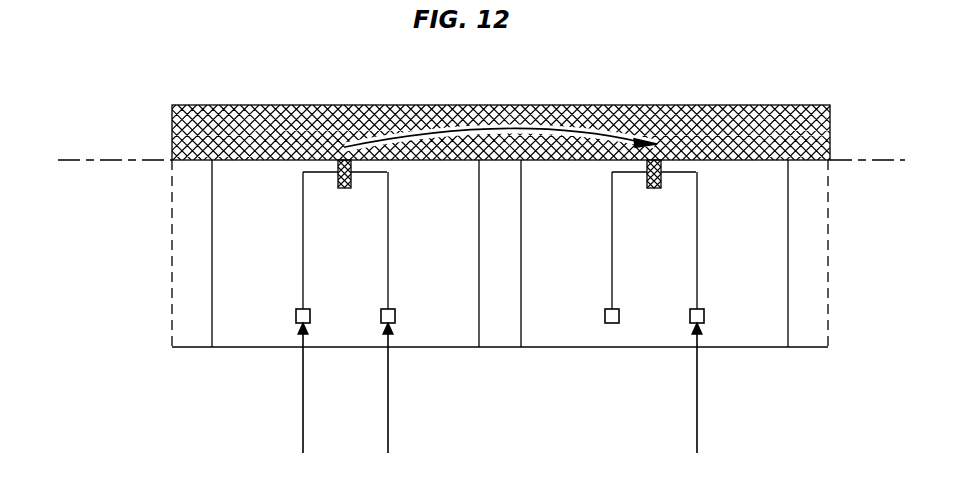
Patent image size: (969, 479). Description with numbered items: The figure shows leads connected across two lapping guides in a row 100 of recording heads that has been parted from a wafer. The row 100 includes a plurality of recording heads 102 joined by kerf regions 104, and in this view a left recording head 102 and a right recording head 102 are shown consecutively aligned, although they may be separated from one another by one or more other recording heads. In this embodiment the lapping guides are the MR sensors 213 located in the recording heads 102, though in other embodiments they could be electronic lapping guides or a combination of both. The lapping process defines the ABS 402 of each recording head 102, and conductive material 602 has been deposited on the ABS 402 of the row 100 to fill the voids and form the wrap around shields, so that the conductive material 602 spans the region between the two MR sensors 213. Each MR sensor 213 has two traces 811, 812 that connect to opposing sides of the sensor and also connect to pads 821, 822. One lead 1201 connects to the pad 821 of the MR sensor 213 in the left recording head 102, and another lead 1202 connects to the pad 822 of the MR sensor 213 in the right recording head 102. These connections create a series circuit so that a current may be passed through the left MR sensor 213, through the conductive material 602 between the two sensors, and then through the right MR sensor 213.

The row 100 is at (672, 62).
The recording head 102 is at (259, 197).
The kerf region 104 is at (190, 345).
The MR sensor 213 is at (345, 188).
The ABS 402 is at (117, 162).
The conductive material 602 is at (264, 105).
The trace 811 is at (303, 264).
The trace 812 is at (388, 264).
The pad 821 is at (296, 316).
The pad 822 is at (395, 316).
The lead 1201 is at (303, 424).
The lead 1202 is at (697, 422).